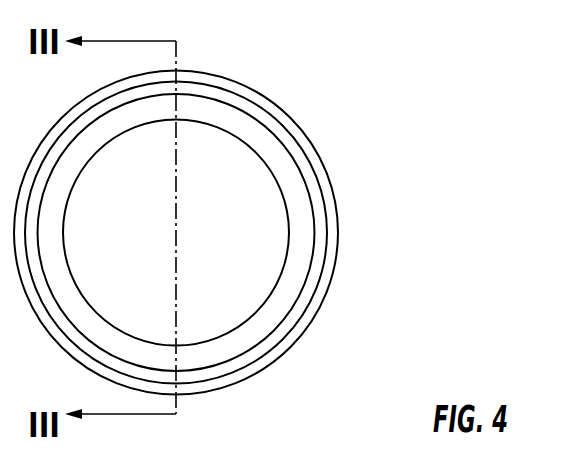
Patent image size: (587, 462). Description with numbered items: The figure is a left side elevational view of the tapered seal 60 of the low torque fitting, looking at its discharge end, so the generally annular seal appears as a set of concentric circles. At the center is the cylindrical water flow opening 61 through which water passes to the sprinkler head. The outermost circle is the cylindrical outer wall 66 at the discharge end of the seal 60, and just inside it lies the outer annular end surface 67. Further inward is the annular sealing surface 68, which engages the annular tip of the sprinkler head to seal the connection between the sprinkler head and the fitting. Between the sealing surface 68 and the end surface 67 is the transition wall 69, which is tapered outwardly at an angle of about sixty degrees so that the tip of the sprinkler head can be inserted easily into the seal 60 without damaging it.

The tapered seal 60 is at (400, 206).
The water flow opening 61 is at (233, 183).
The cylindrical outer wall 66 is at (337, 258).
The outer annular end surface 67 is at (268, 113).
The annular sealing surface 68 is at (288, 285).
The transition wall 69 is at (300, 303).